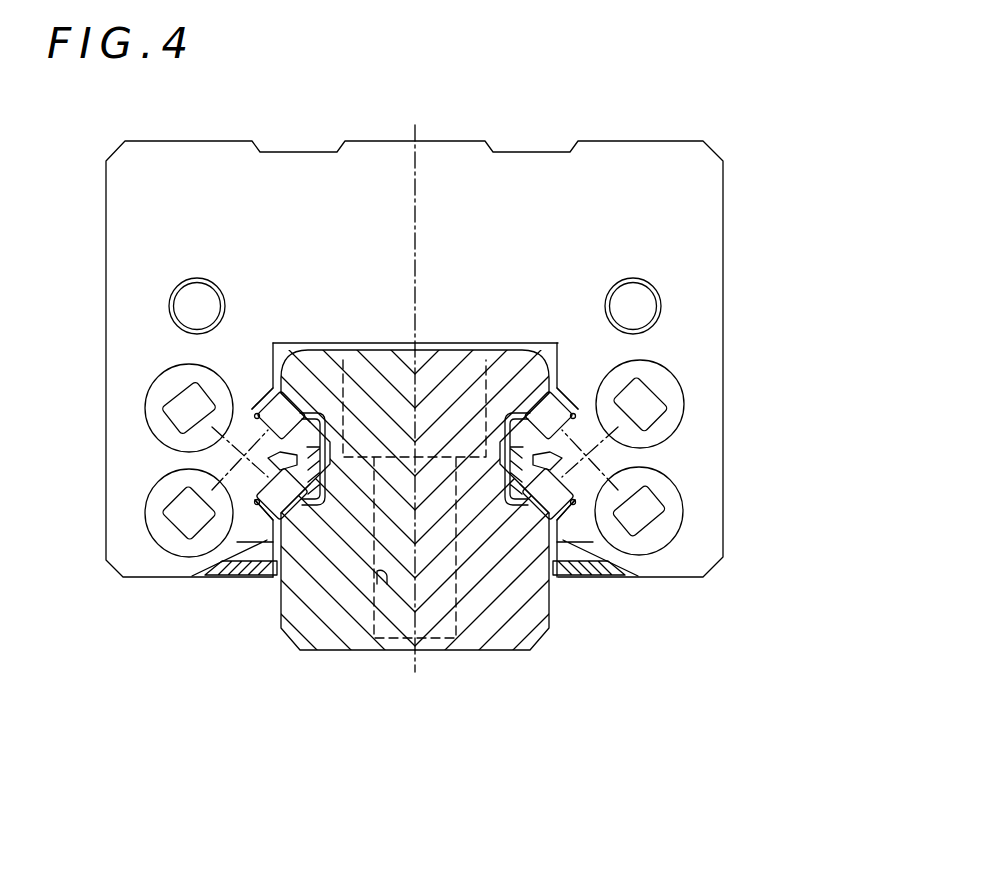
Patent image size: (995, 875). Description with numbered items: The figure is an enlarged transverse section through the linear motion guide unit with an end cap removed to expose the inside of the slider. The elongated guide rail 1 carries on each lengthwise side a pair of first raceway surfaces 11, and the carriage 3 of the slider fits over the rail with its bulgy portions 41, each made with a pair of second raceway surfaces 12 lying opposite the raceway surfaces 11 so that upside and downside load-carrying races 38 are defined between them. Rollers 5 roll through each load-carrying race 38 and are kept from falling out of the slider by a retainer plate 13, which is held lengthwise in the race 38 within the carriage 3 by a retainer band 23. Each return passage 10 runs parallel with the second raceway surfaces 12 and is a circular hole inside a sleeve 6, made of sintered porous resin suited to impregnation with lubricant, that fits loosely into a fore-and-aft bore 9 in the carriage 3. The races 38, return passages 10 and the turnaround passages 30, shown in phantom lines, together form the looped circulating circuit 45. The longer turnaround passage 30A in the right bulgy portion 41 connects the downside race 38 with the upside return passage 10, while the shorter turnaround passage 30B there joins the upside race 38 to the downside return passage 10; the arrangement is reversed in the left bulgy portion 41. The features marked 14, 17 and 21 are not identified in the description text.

The guide rail 1 is at (463, 587).
The carriage 3 is at (618, 168).
The roller 5 is at (299, 352).
The sleeve 6 is at (167, 385).
The fore-and-aft bore 9 is at (183, 385).
The return passage 10 is at (650, 402).
The first raceway surface 11 is at (284, 412).
The second raceway surface 12 is at (268, 417).
The retainer plate 13 is at (292, 525).
The casing raceway surface 14 is at (572, 522).
The bolt hole 17 is at (387, 585).
The mounting hole 21 is at (185, 303).
The retainer band 23 is at (351, 420).
The turnaround passage 30 is at (262, 492).
The longer turnaround passage 30A is at (258, 488).
The shorter turnaround passage 30B is at (258, 416).
The load-carrying race 38 is at (522, 407).
The bulgy portion 41 is at (118, 532).
The circulating circuit 45 is at (247, 418).